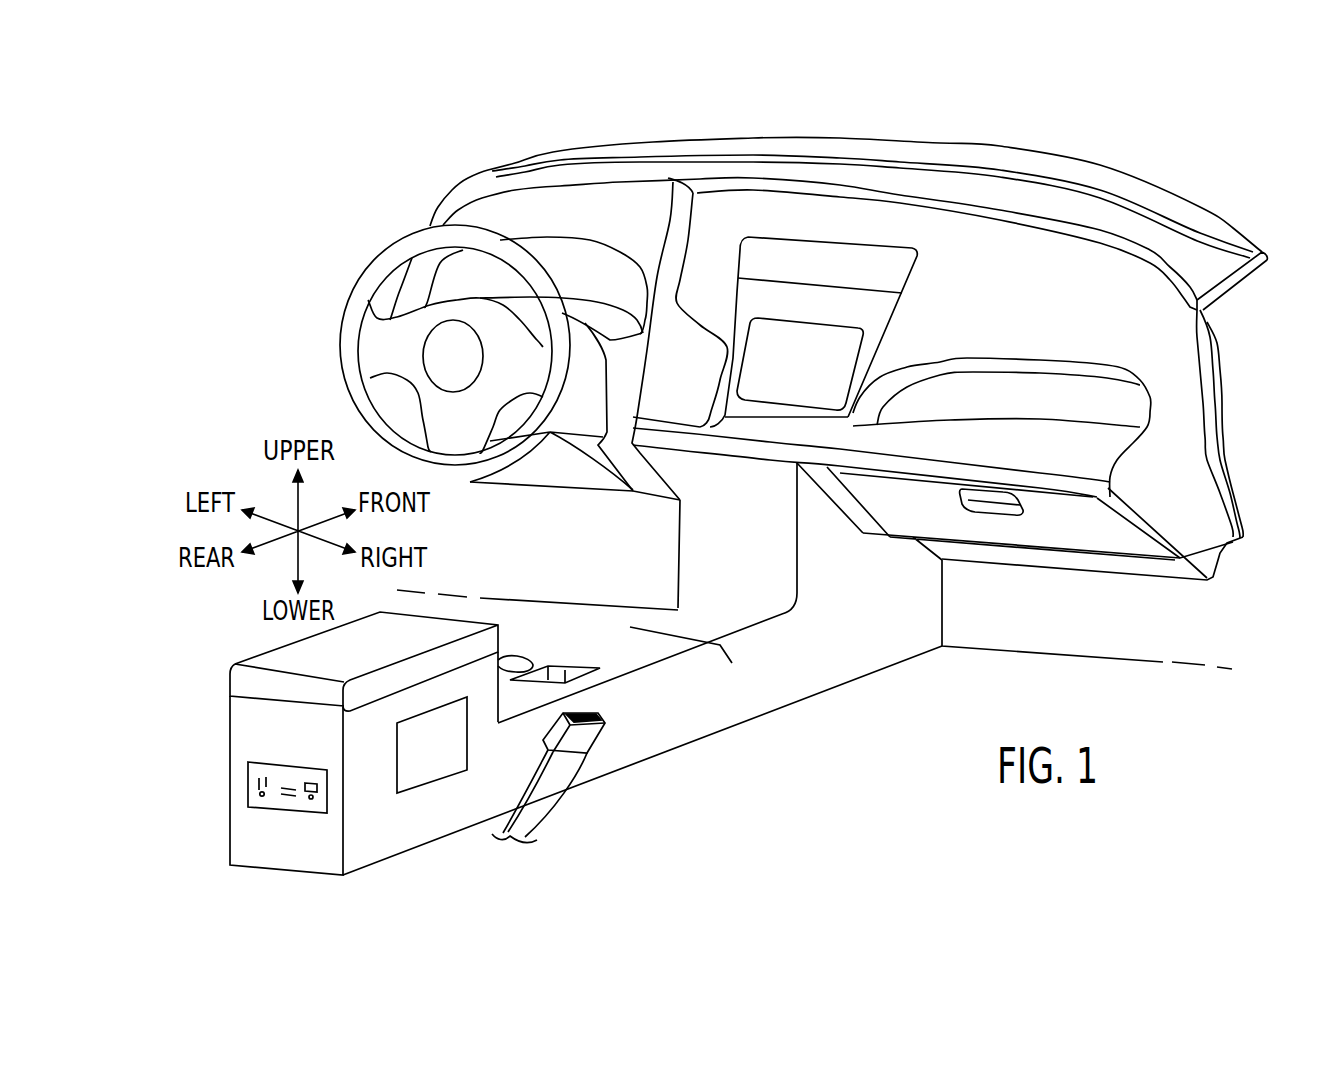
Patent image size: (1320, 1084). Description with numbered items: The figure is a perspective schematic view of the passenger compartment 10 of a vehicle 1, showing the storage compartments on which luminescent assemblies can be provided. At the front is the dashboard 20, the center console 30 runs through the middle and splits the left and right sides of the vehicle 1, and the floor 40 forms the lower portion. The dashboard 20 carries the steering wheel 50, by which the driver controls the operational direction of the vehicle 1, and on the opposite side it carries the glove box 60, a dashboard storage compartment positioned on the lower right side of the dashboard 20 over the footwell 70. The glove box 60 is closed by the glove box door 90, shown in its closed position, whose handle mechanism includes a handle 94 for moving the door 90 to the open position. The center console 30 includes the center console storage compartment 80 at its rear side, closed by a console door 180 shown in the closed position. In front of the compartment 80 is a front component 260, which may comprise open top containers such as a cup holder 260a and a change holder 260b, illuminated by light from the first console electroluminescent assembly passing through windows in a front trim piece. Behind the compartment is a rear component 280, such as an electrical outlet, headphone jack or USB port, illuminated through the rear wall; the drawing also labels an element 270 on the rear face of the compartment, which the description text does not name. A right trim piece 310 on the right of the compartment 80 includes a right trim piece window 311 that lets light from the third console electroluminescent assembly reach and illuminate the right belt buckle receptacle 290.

The vehicle 1 is at (347, 152).
The passenger compartment 10 is at (535, 135).
The dashboard 20 is at (1027, 250).
The center console 30 is at (752, 686).
The floor 40 is at (1110, 686).
The steering wheel 50 is at (355, 323).
The glove box 60 is at (1075, 524).
The footwell 70 is at (1143, 625).
The center console storage compartment 80 is at (235, 635).
The glove box door 90 is at (943, 528).
The handle 94 is at (990, 505).
The console door 180 is at (442, 622).
The front component 260 is at (657, 600).
The cup holder 260a is at (522, 658).
The change holder 260b is at (597, 668).
The housing 270 is at (247, 740).
The rear component 280 is at (280, 798).
The right belt buckle receptacle 290 is at (587, 737).
The right trim piece 310 is at (382, 833).
The right trim piece window 311 is at (427, 762).